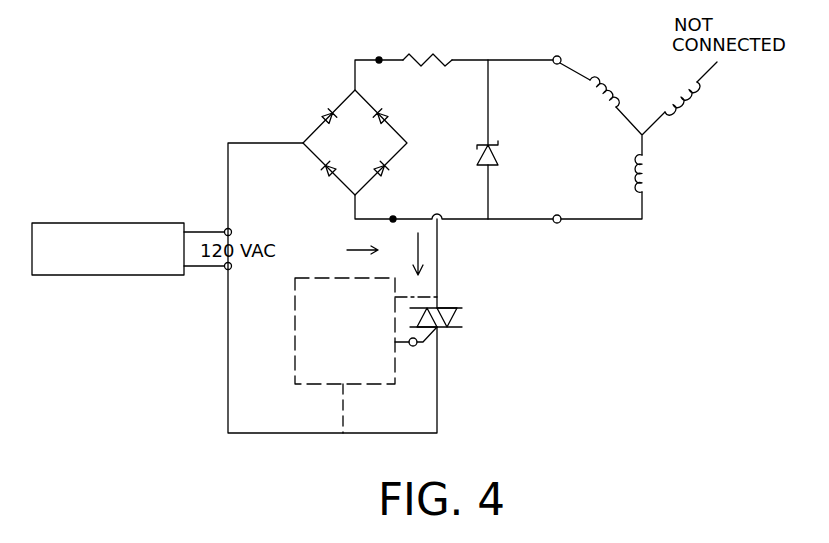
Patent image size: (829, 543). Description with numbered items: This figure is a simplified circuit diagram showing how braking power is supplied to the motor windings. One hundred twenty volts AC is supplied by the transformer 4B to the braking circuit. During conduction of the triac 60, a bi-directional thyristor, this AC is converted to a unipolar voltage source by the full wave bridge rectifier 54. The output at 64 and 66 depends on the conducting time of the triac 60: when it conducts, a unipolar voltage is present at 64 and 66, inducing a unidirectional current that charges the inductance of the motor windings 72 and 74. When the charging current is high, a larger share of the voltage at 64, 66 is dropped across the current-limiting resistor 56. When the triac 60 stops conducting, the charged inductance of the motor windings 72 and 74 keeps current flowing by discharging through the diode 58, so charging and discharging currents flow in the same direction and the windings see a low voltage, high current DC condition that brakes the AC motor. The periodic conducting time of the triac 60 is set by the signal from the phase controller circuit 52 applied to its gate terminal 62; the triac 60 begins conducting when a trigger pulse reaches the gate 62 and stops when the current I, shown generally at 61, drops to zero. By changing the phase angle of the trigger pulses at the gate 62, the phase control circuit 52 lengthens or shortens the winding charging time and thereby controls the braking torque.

The transformer 4B is at (128, 212).
The phase controller circuit 52 is at (355, 339).
The full wave bridge rectifier 54 is at (312, 91).
The current-limiting resistor 56 is at (448, 59).
The diode 58 is at (496, 146).
The triac 60 is at (463, 308).
The current I 61 is at (372, 254).
The gate terminal 62 is at (413, 347).
The rectifier output 64 is at (379, 59).
The rectifier output 66 is at (393, 217).
The motor winding 72 is at (605, 103).
The motor winding 74 is at (640, 178).